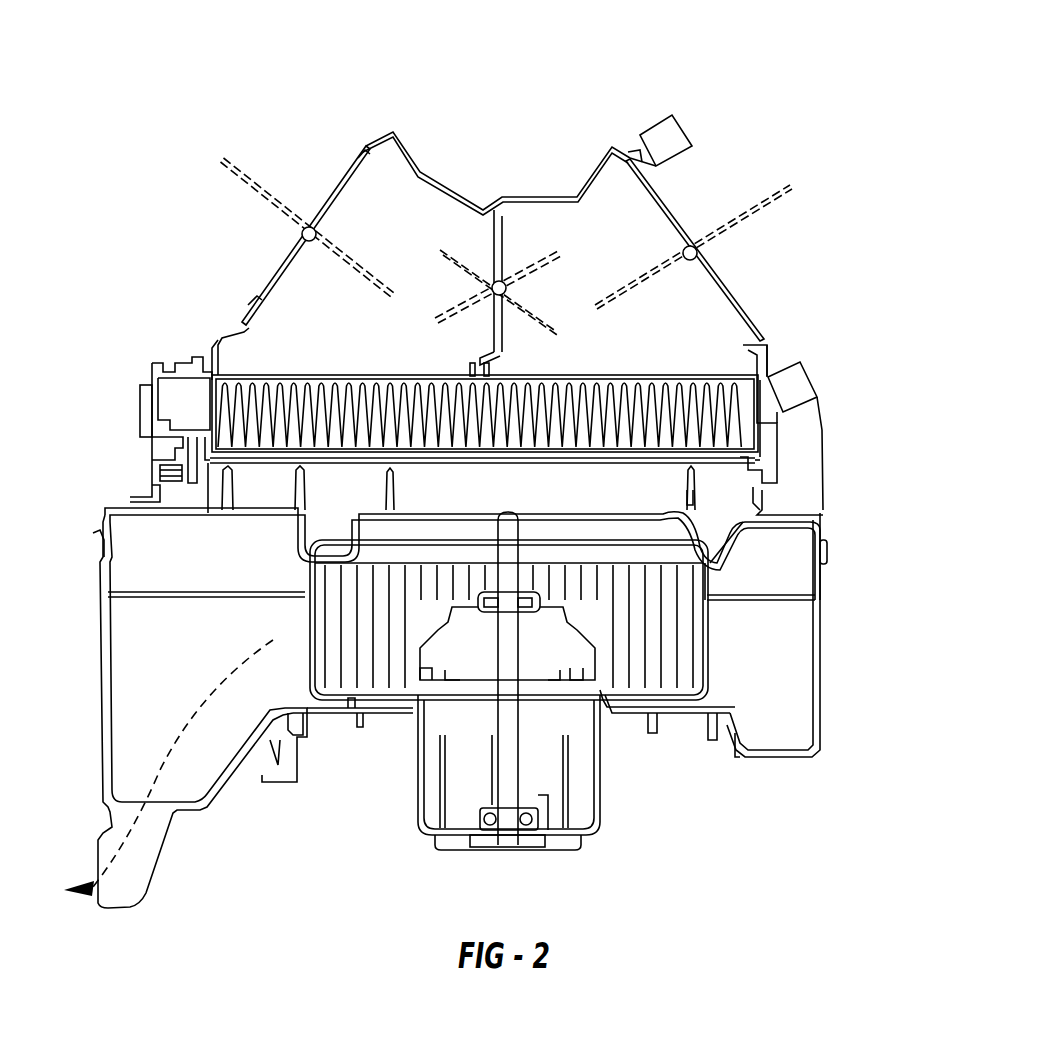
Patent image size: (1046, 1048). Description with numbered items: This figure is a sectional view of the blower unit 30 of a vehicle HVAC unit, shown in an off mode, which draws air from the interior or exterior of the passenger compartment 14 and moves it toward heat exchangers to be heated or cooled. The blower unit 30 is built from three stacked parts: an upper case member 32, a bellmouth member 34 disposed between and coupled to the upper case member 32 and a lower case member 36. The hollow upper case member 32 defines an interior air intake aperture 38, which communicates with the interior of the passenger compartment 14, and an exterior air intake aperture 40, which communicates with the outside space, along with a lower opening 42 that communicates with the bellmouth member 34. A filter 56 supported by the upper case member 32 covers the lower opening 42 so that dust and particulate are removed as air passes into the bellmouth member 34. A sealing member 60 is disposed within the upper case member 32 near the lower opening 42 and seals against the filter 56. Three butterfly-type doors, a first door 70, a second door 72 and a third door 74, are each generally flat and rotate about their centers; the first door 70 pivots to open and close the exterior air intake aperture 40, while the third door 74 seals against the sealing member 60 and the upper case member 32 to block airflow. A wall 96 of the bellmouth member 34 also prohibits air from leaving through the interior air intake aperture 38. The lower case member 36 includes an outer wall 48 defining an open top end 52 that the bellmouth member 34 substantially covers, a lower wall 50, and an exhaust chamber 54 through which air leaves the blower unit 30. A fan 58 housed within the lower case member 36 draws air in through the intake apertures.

The passenger compartment 14 is at (162, 108).
The blower unit 30 is at (677, 65).
The upper case member 32 is at (213, 340).
The bellmouth member 34 is at (722, 487).
The lower case member 36 is at (815, 640).
The interior air intake aperture 38 is at (185, 237).
The exterior air intake aperture 40 is at (785, 270).
The lower opening 42 is at (382, 470).
The outer wall 48 is at (815, 680).
The lower wall 50 is at (697, 713).
The top end 52 is at (777, 530).
The exhaust chamber 54 is at (163, 693).
The filter 56 is at (641, 392).
The fan 58 is at (413, 608).
The sealing member 60 is at (497, 360).
The first door 70 is at (670, 210).
The second door 72 is at (337, 190).
The third door 74 is at (503, 250).
The wall 96 is at (393, 478).